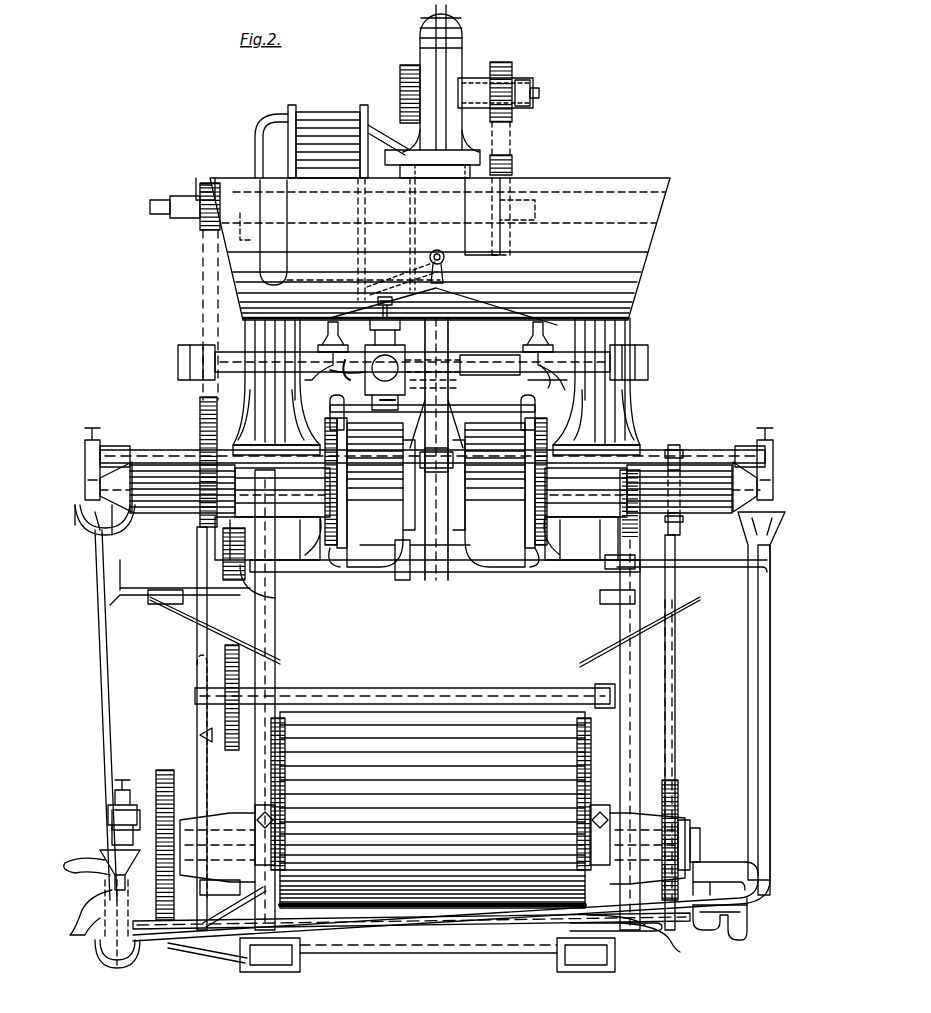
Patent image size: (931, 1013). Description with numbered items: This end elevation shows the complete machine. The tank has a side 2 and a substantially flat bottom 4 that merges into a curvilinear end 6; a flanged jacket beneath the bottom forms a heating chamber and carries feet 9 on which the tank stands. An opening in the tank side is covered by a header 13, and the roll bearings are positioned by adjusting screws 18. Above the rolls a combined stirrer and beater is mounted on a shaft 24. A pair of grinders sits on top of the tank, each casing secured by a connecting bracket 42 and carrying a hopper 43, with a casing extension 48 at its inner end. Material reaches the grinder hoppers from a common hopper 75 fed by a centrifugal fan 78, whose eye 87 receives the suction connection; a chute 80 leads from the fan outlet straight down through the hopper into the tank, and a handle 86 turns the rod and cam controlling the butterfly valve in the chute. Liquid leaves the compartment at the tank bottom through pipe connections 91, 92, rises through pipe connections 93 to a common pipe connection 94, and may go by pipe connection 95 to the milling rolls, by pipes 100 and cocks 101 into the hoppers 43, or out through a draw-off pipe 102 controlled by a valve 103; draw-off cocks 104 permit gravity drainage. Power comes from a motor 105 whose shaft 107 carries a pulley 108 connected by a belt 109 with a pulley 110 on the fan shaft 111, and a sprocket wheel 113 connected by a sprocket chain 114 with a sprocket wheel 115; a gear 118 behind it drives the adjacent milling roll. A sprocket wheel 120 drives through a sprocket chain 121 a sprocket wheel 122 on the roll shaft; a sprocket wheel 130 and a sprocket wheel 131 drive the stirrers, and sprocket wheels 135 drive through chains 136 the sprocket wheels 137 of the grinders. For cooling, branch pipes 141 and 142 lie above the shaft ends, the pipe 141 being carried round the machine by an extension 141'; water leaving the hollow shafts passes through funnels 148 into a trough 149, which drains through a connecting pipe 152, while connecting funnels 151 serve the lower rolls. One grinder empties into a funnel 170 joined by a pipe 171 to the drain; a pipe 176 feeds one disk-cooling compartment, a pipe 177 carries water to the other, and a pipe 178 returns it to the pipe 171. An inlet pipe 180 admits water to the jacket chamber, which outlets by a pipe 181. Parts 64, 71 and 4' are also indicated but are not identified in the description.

The centrifugal fan 78 is at (452, 45).
The eye of the fan 87 is at (400, 85).
The pulley 110 is at (512, 72).
The shaft of the fan 111 is at (539, 93).
The belt 109 is at (512, 138).
The pulley 108 is at (512, 166).
The motor 105 is at (328, 112).
The sprocket wheel 113 is at (200, 178).
The motor shaft 107 is at (160, 212).
The sprocket chain 114 is at (203, 305).
The hopper 75 is at (440, 251).
The handle 86 is at (445, 262).
The pipe connection 94 is at (205, 345).
The cocks 101 is at (352, 340).
The valve 103 is at (405, 338).
The pipes 100 is at (447, 380).
The draw-off pipe 102 is at (440, 383).
The chute 80 is at (455, 337).
The pipe 177 is at (488, 420).
The hopper 43 is at (262, 395).
The casing extension 48 is at (436, 492).
The shaft 64 is at (430, 491).
The extension of branch pipe 141' is at (432, 448).
The sprocket wheel 120 is at (676, 445).
The branch pipe 141 is at (431, 464).
The funnel 148 is at (162, 513).
The trough 149 is at (93, 524).
The funnel 170 is at (773, 696).
The sprocket wheels 137 is at (200, 505).
The sprocket wheel 115 is at (223, 545).
The connecting bracket 42 is at (295, 535).
The pipe 178 is at (700, 556).
The gear 118 is at (250, 592).
The pipe 176 is at (395, 580).
The pipe connection 95 is at (255, 640).
The pipe connections 93 is at (625, 690).
The side of tank 2 is at (275, 670).
The pipe 171 is at (758, 698).
The pipe 71 is at (420, 922).
The connecting pipe 152 is at (105, 720).
The sprocket wheel 130 is at (195, 690).
The chains 136 is at (198, 735).
The sprocket wheel 131 is at (230, 665).
The shaft 24 is at (405, 706).
The curvilinear end of tank 6 is at (432, 810).
The header 13 is at (271, 750).
The adjusting screws 18 is at (258, 825).
The sprocket chain 121 is at (670, 752).
The sprocket wheels 135 is at (678, 783).
The sprocket wheel 122 is at (685, 815).
The branch pipe 142 is at (108, 840).
The bottom of tank 4 is at (365, 917).
The base rail 4' is at (428, 959).
The feet 9 is at (270, 972).
The connecting funnels 151 is at (95, 950).
The pipe 181 is at (210, 950).
The pipe connection 91 is at (243, 910).
The inlet pipe 180 is at (640, 935).
The pipe connection 92 is at (686, 952).
The draw-off cocks 104 is at (740, 940).